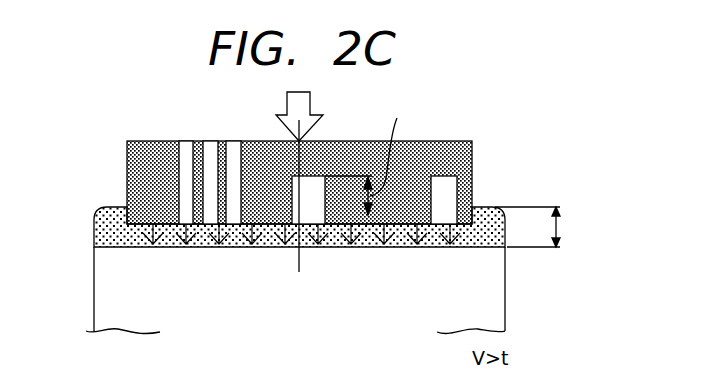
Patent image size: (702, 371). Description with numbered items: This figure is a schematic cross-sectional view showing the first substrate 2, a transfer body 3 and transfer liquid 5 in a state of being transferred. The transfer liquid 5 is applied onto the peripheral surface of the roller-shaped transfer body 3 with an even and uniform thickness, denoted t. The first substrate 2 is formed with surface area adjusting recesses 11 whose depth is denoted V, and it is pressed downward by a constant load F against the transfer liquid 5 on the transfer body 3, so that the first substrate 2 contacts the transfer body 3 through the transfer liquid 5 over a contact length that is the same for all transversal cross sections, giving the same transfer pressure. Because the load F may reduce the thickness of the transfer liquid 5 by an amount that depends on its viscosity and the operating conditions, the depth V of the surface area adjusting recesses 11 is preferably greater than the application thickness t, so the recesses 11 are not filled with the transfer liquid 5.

The first substrate 2 is at (437, 142).
The transfer body 3 is at (483, 297).
The transfer liquid 5 is at (483, 220).
The surface area adjusting recess 11 is at (453, 187).